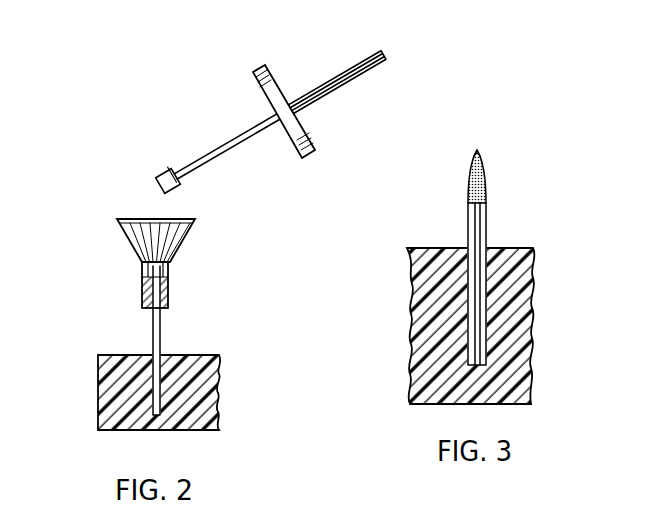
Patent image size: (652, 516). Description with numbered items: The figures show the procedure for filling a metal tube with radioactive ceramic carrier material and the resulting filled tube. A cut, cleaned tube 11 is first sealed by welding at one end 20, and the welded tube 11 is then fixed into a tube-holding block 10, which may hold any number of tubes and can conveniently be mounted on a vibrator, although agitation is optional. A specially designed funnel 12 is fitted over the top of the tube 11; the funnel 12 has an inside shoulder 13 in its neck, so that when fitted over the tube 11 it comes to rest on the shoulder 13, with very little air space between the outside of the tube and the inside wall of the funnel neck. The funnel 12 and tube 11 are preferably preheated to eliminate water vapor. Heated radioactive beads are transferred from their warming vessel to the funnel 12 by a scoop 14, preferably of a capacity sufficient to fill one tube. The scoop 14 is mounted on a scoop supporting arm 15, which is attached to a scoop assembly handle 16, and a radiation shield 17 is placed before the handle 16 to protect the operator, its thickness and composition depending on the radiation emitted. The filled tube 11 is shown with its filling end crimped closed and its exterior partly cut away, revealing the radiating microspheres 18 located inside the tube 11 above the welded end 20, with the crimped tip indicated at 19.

In FIG. 2, the tube-holding block 10 is at (207, 382).
In FIG. 3, the tube-holding block 10 is at (523, 258).
In FIG. 2, the tube 11 is at (160, 333).
In FIG. 3, the tube 11 is at (485, 223).
In FIG. 2, the funnel 12 is at (182, 239).
In FIG. 2, the inside shoulder 13 is at (158, 282).
In FIG. 2, the scoop 14 is at (157, 176).
In FIG. 2, the scoop supporting arm 15 is at (202, 165).
In FIG. 2, the scoop assembly handle 16 is at (352, 83).
In FIG. 2, the radiation shield 17 is at (300, 132).
In FIG. 3, the radiating microspheres 18 is at (483, 182).
In FIG. 3, the tip point 19 is at (481, 141).
In FIG. 2, the welded end 20 is at (155, 417).
In FIG. 3, the welded end 20 is at (478, 367).